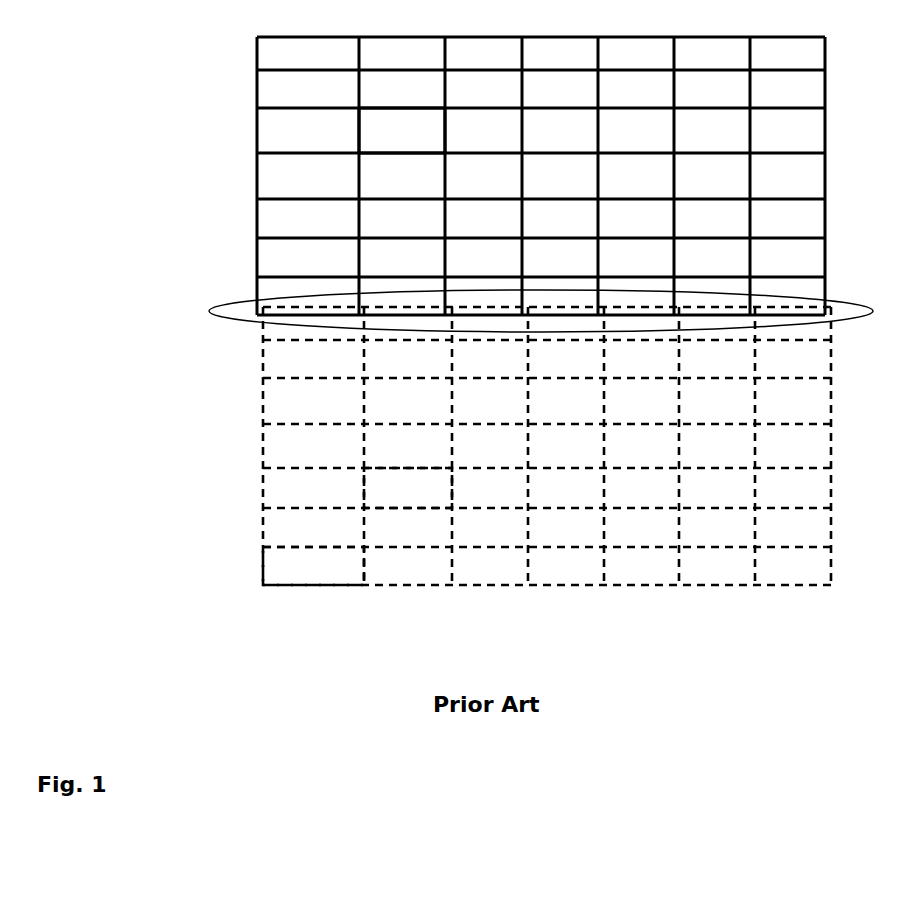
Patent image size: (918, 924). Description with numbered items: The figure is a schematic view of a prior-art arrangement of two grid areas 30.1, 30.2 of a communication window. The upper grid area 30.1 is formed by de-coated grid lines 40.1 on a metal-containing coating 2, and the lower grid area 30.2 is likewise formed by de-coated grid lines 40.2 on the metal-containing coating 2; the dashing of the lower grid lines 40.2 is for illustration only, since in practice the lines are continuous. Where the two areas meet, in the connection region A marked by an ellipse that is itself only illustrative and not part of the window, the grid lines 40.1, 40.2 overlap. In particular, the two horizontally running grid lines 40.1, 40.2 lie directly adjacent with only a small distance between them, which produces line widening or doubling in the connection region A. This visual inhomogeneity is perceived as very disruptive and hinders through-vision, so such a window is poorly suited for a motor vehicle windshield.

The upper grid area 30.1 is at (231, 98).
The grid lines 40.1 is at (342, 142).
The connection region A is at (231, 294).
The lower grid area 30.2 is at (239, 451).
The de-coated grid lines 40.2 is at (349, 490).
The metal-containing coating 2 is at (298, 562).